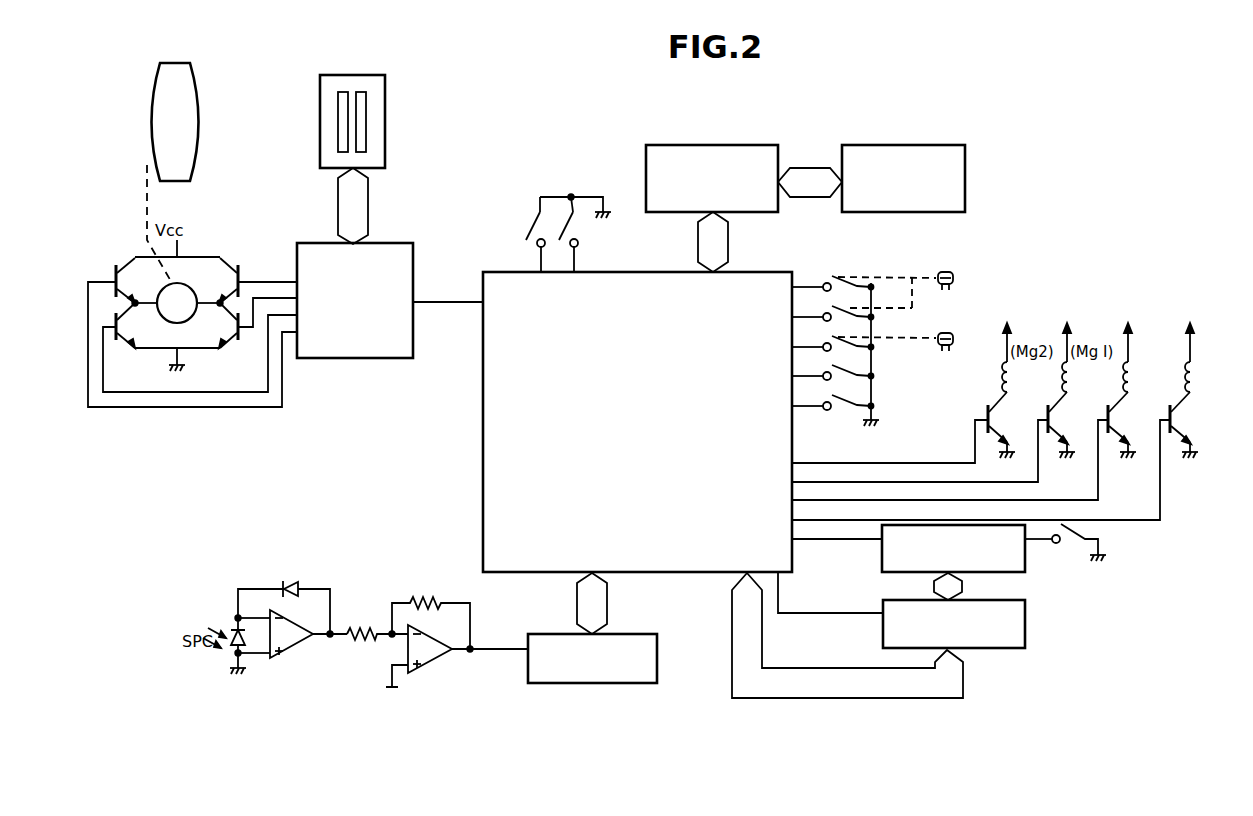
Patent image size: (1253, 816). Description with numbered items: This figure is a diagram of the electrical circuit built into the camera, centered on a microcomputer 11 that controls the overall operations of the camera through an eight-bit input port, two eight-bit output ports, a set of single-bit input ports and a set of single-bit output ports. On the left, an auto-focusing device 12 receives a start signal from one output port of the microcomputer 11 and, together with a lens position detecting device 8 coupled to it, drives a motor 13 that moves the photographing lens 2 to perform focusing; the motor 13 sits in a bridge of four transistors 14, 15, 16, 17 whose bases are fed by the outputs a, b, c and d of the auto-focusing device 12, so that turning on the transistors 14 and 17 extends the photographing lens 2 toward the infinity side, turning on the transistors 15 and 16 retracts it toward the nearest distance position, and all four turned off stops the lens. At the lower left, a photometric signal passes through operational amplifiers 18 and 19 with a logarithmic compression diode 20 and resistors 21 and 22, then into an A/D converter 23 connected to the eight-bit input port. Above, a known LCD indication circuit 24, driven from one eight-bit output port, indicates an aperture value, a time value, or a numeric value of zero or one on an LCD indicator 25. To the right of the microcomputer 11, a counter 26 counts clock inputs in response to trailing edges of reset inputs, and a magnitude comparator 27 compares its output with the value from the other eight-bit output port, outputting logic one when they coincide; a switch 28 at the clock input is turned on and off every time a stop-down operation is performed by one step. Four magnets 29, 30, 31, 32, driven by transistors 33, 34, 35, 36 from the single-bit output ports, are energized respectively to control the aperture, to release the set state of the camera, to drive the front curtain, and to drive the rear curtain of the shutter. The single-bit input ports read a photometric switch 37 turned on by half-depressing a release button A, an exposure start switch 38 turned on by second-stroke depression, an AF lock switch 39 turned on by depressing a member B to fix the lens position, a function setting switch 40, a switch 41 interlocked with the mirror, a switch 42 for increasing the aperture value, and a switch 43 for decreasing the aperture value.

The photographing lens 2 is at (202, 100).
The lens position detecting device 8 is at (385, 106).
The microcomputer 11 is at (483, 498).
The auto-focusing device 12 is at (363, 358).
The motor 13 is at (180, 323).
The transistor 14 is at (124, 275).
The transistor 15 is at (128, 327).
The transistor 16 is at (218, 275).
The transistor 17 is at (226, 329).
The operational amplifier 18 is at (298, 648).
The operational amplifier 19 is at (432, 660).
The logarithmic compression diode 20 is at (284, 595).
The resistor 21 is at (377, 622).
The resistor 22 is at (431, 612).
The A/D converter 23 is at (657, 656).
The LCD indication circuit 24 is at (727, 145).
The LCD indicator 25 is at (893, 145).
The counter 26 is at (880, 556).
The magnitude comparator 27 is at (881, 626).
The switch 28 is at (1092, 532).
The magnet 29 is at (1012, 382).
The magnet 30 is at (1072, 382).
The magnet 31 is at (1133, 382).
The magnet 32 is at (1195, 382).
The transistor 33 is at (995, 424).
The transistor 34 is at (1055, 424).
The transistor 35 is at (1115, 424).
The transistor 36 is at (1177, 424).
The photometric switch 37 is at (846, 290).
The exposure start switch 38 is at (846, 320).
The AF lock switch 39 is at (846, 350).
The function setting switch 40 is at (846, 379).
The switch 41 is at (846, 409).
The switch 42 is at (524, 235).
The switch 43 is at (585, 235).
The release button A is at (956, 272).
The member B is at (954, 331).